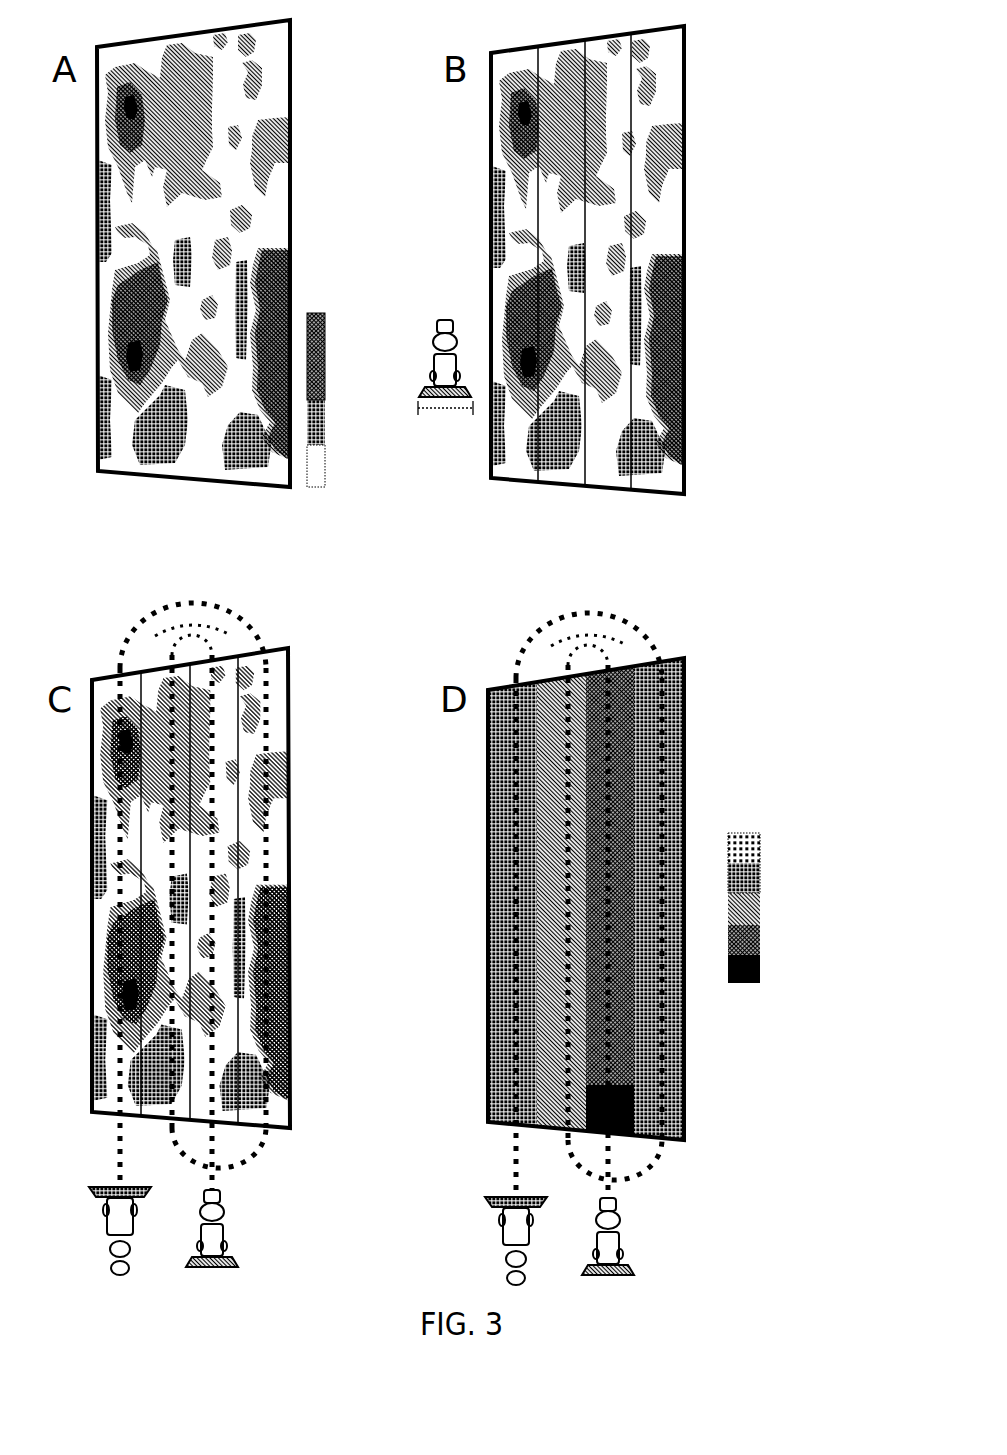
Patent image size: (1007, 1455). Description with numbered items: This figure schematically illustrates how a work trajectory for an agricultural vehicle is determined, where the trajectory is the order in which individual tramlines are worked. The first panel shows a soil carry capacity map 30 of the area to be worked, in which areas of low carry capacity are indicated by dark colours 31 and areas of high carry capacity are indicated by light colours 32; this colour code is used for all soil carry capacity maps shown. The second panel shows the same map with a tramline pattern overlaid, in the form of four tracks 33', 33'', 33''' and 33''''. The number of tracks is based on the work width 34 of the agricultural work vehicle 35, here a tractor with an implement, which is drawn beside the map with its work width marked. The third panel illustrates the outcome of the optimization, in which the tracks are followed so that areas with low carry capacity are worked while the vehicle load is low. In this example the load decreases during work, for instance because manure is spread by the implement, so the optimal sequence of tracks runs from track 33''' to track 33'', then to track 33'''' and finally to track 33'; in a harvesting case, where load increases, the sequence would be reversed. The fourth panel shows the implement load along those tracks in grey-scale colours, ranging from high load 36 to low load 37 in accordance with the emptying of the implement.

In FIG. 3A, the soil carry capacity map 30 is at (290, 44).
In FIG. 3A, the dark colours 31 is at (325, 335).
In FIG. 3A, the light colours 32 is at (325, 478).
In FIG. 3B, the track 33' is at (521, 293).
In FIG. 3B, the track 33'' is at (573, 313).
In FIG. 3B, the track 33''' is at (620, 286).
In FIG. 3B, the track 33'''' is at (671, 306).
In FIG. 3B, the work width 34 is at (447, 409).
In FIG. 3B, the agricultural work vehicle 35 is at (440, 318).
In FIG. 3D, the high load 36 is at (760, 982).
In FIG. 3D, the low load 37 is at (760, 838).